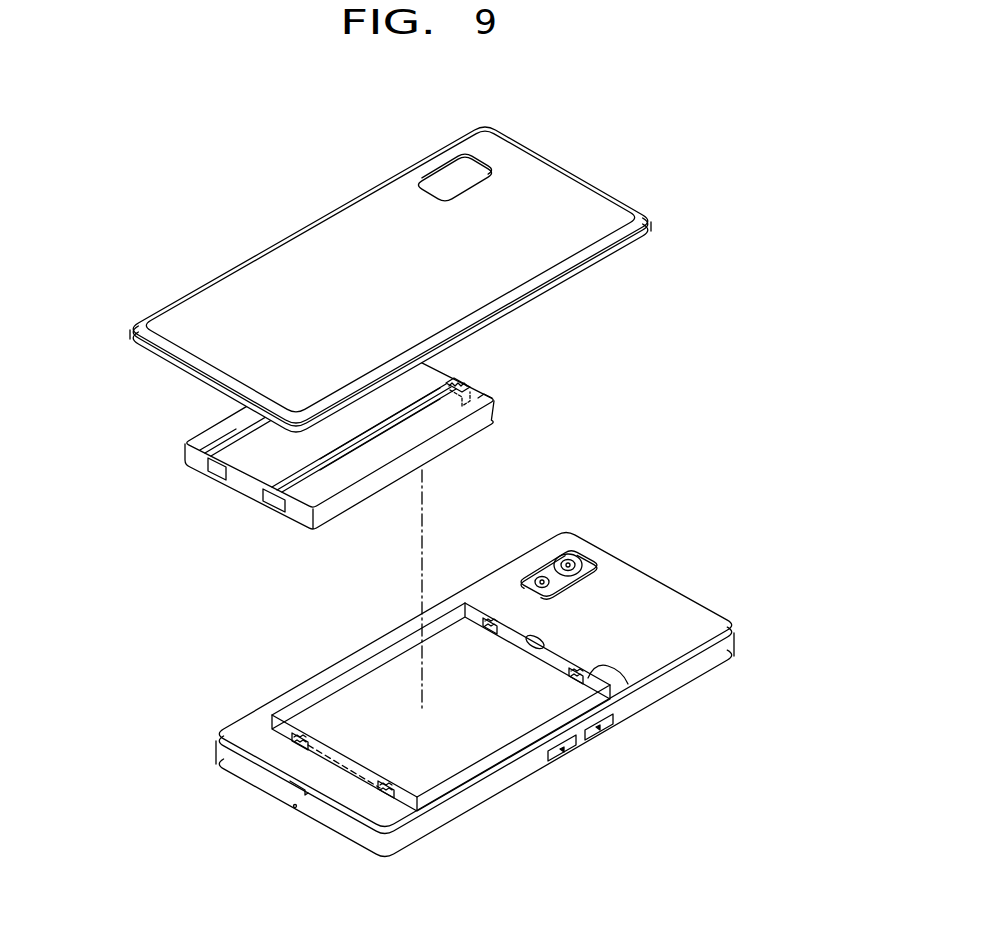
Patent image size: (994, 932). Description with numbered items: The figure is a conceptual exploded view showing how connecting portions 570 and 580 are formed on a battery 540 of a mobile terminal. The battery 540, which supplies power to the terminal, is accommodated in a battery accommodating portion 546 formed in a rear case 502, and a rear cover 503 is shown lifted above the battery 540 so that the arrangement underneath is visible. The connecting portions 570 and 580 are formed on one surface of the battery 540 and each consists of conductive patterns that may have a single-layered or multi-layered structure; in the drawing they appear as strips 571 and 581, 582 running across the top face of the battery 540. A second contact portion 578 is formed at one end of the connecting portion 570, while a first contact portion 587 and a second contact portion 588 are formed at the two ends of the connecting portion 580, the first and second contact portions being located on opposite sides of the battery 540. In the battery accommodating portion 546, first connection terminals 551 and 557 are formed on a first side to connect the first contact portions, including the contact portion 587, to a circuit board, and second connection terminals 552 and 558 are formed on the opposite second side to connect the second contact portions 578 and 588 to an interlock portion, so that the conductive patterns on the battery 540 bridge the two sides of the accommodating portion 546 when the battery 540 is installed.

The rear case 502 is at (658, 590).
The battery cover 503 is at (565, 182).
The battery 540 is at (240, 490).
The battery accommodating portion 546 is at (380, 685).
The first connection terminal 551 is at (592, 664).
The second connection terminal 552 is at (392, 795).
The first contact terminals 557 is at (490, 620).
The connection terminal 558 is at (300, 735).
The connecting portion 570 is at (221, 443).
The strip member 571 is at (255, 432).
The second contact portion 578 is at (213, 467).
The connecting portion 580 is at (331, 471).
The first conductor line 581 is at (423, 400).
The second conductor line 582 is at (410, 418).
The first contact portion 587 is at (470, 382).
The second contact portion 588 is at (275, 500).